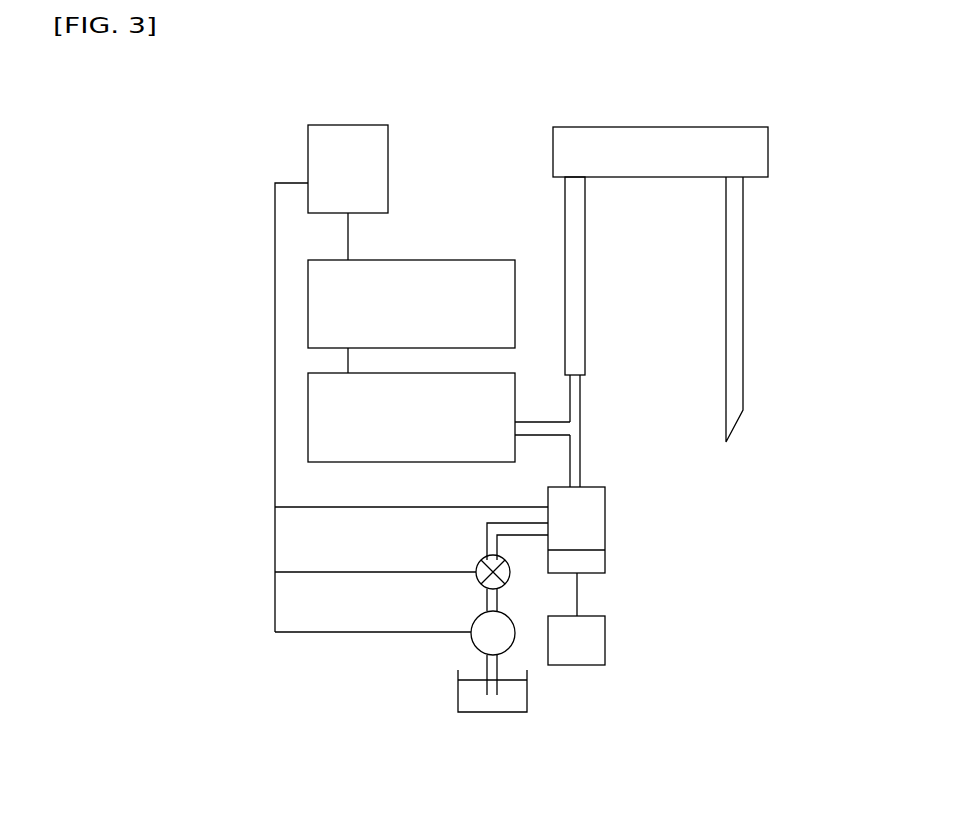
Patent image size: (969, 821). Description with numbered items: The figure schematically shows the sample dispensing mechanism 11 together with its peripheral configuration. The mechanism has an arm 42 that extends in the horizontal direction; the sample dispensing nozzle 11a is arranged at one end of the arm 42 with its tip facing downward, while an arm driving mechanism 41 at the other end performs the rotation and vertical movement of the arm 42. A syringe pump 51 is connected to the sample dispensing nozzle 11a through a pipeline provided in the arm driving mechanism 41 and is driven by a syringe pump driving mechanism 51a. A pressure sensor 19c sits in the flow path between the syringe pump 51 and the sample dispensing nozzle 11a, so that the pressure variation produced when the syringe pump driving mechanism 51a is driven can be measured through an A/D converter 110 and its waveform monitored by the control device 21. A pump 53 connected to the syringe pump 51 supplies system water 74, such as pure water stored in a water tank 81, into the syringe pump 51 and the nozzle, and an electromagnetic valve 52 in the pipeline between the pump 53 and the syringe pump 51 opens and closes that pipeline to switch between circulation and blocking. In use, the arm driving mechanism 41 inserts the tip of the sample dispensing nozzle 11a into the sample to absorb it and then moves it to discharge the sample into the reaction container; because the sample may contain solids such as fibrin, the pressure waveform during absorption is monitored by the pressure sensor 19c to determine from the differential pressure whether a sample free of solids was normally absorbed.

The sample dispensing mechanism 11 is at (550, 62).
The control device 21 is at (378, 162).
The A/D converter 110 is at (314, 303).
The pressure sensor 19c is at (314, 413).
The arm 42 is at (768, 146).
The arm driving mechanism 41 is at (583, 225).
The sample dispensing nozzle 11a is at (741, 226).
The syringe pump 51 is at (605, 522).
The syringe pump driving mechanism 51a is at (605, 650).
The electromagnetic valve 52 is at (482, 565).
The pump 53 is at (474, 620).
The system water 74 is at (470, 706).
The water tank 81 is at (530, 692).